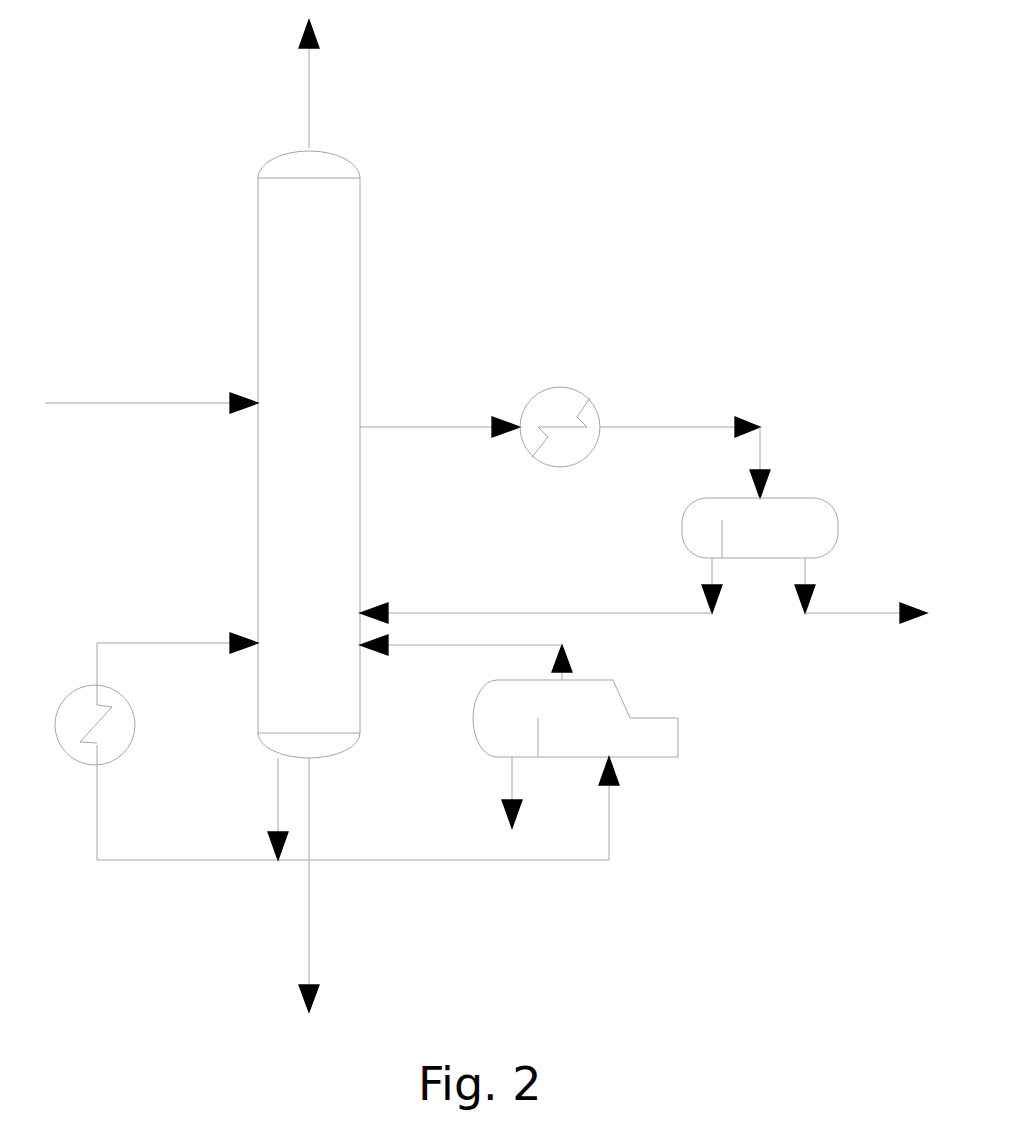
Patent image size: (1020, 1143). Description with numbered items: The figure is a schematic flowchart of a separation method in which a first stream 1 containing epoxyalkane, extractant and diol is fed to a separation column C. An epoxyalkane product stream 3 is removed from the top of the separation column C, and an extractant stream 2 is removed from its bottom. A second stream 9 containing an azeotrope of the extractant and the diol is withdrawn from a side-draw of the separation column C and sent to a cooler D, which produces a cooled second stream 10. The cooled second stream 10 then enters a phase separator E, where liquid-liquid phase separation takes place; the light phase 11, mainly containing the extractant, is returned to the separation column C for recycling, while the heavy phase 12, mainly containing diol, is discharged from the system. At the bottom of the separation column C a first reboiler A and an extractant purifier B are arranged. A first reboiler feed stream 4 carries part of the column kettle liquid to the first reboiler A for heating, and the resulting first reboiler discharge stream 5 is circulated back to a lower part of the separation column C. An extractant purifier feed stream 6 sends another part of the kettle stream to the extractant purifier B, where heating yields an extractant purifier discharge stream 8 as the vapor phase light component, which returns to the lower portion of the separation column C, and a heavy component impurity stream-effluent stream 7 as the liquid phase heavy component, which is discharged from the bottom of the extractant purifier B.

The first stream 1 is at (151, 380).
The extractant stream 2 is at (325, 889).
The epoxyalkane product stream 3 is at (330, 82).
The first reboiler feed stream 4 is at (192, 802).
The first reboiler discharge stream 5 is at (177, 647).
The extractant purifier feed stream 6 is at (448, 808).
The heavy component impurity stream-effluent stream 7 is at (531, 792).
The extractant purifier discharge stream 8 is at (466, 659).
The second stream 9 is at (440, 407).
The cooled second stream 10 is at (685, 437).
The light phase 11 is at (541, 590).
The heavy phase 12 is at (861, 590).
The first reboiler A is at (115, 725).
The extractant purifier B is at (557, 718).
The separation column C is at (309, 454).
The cooler D is at (560, 395).
The phase separator E is at (760, 507).